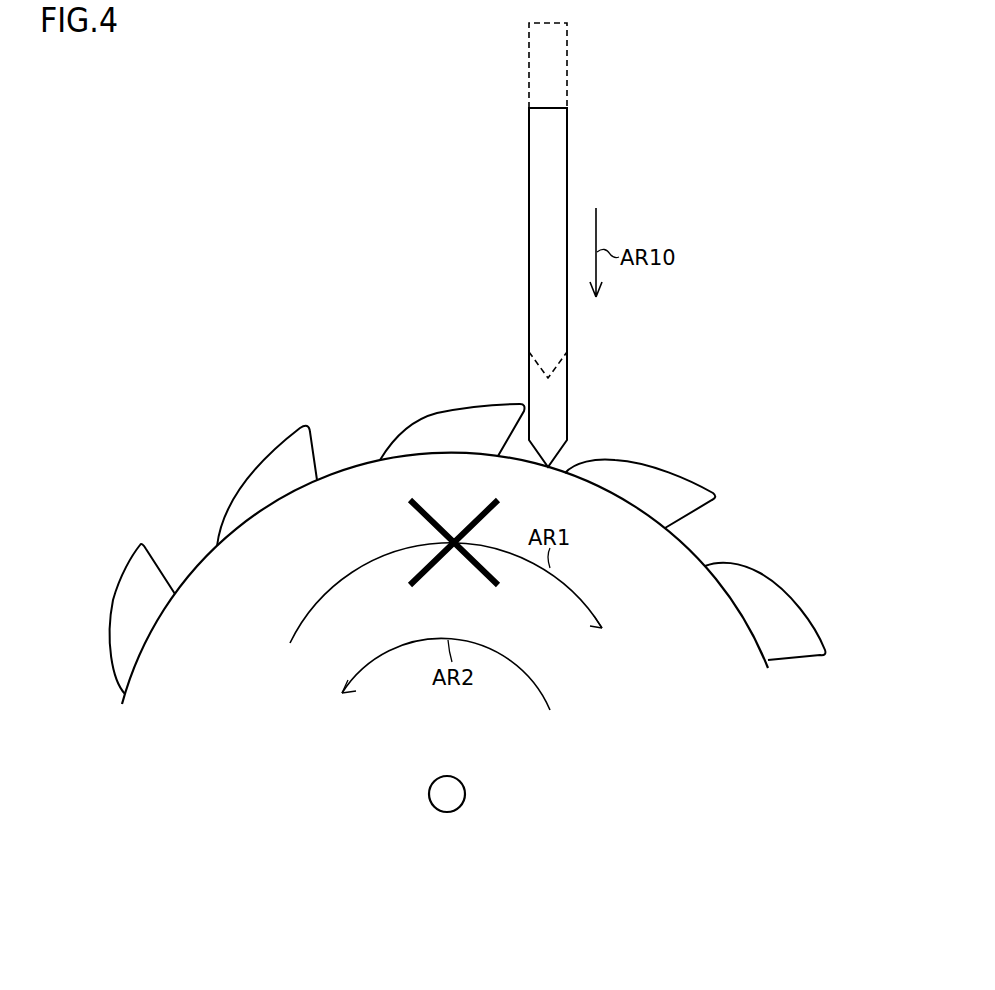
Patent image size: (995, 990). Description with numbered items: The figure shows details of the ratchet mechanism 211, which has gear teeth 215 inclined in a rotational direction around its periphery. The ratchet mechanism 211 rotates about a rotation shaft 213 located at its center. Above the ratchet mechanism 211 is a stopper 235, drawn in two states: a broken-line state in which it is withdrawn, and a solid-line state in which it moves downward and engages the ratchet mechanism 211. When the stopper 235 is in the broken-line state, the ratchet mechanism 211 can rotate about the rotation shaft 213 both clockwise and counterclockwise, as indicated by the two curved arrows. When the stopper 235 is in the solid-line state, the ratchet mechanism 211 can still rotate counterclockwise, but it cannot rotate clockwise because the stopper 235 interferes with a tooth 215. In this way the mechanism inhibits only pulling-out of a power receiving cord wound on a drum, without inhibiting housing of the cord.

The ratchet mechanism 211 is at (775, 534).
The rotation shaft 213 is at (446, 813).
The tooth 215 is at (306, 425).
The stopper 235 is at (528, 180).